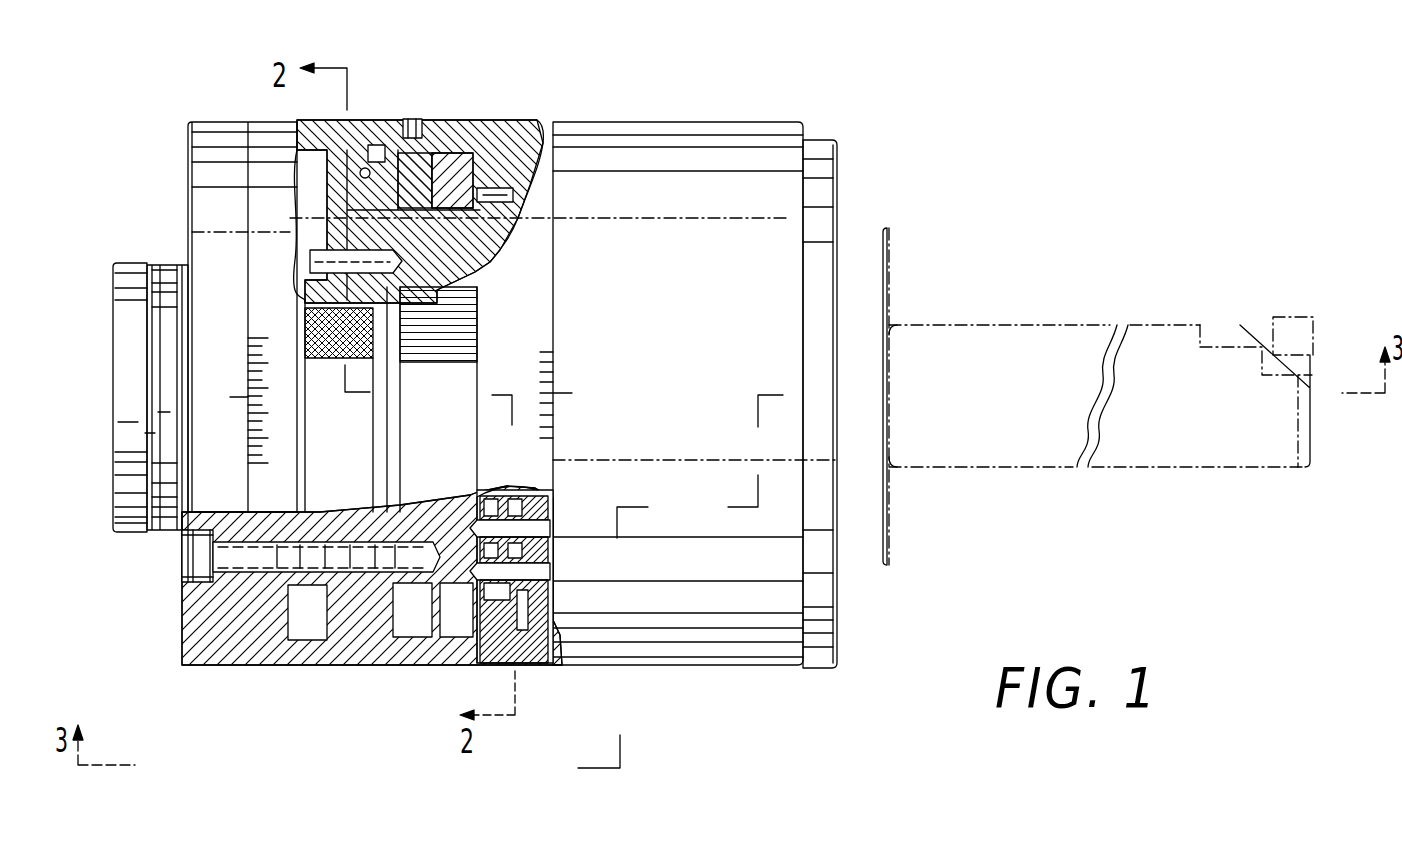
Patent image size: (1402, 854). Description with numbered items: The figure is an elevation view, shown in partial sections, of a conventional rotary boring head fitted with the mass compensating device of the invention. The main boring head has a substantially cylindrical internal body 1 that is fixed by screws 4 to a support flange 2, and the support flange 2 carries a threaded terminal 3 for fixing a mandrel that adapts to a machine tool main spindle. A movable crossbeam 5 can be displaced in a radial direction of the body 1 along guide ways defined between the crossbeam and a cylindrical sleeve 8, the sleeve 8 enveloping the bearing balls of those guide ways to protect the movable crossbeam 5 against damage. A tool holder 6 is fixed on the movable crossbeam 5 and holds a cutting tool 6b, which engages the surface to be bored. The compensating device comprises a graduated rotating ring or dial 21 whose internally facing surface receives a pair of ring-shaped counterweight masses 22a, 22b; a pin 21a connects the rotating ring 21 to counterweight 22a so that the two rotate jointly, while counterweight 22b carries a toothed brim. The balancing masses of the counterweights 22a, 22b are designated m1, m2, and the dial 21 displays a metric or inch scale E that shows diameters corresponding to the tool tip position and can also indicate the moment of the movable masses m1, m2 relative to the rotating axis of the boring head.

The internal body 1 is at (513, 225).
The support flange 2 is at (348, 602).
The terminal 3 is at (125, 272).
The screws 4 is at (207, 550).
The movable crossbeam 5 is at (822, 193).
The tool holder 6 is at (1010, 343).
The cutting tool 6b is at (1286, 326).
The cylindrical sleeve 8 is at (730, 635).
The graduated rotating ring 21 is at (450, 182).
The pin 21a is at (412, 137).
The counterweight mass 22a is at (405, 632).
The counterweight mass 22b is at (443, 630).
The balancing mass m1 is at (413, 190).
The balancing mass m2 is at (456, 165).
The scale E is at (543, 380).